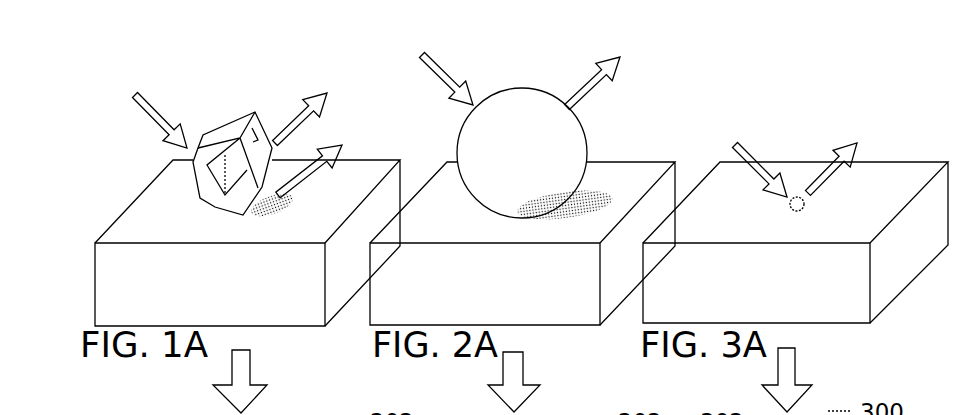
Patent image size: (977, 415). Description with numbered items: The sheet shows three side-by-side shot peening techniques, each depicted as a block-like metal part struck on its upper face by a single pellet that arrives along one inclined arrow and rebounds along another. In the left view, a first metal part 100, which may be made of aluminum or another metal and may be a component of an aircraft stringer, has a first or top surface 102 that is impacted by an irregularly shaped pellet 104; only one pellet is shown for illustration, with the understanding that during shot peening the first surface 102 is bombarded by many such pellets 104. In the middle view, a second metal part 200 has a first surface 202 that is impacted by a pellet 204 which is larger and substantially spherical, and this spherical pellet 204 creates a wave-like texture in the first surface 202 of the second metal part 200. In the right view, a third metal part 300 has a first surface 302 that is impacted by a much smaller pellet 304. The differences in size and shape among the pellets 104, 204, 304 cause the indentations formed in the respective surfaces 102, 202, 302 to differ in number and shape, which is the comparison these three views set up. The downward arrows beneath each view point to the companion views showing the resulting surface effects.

In FIG. 1A, the first metal part 100 is at (246, 203).
In FIG. 1A, the first surface 102 is at (230, 233).
In FIG. 1A, the pellet 104 is at (252, 118).
In FIG. 2A, the second metal part 200 is at (517, 189).
In FIG. 2A, the first surface 202 is at (495, 233).
In FIG. 2A, the pellet 204 is at (587, 140).
In FIG. 3A, the third metal part 300 is at (795, 215).
In FIG. 3A, the first surface 302 is at (775, 235).
In FIG. 3A, the pellet 304 is at (798, 212).